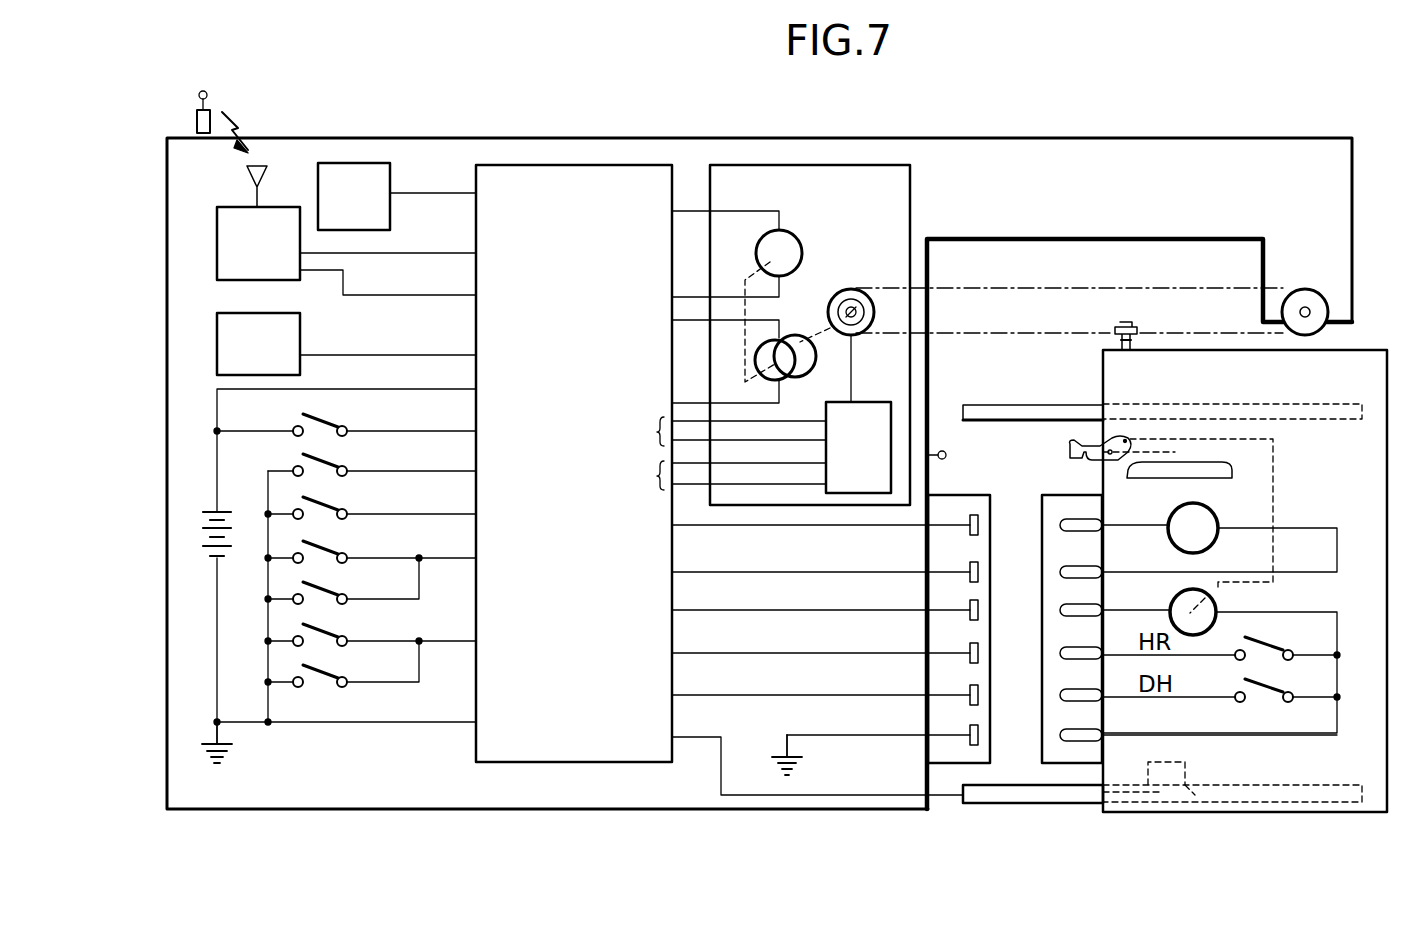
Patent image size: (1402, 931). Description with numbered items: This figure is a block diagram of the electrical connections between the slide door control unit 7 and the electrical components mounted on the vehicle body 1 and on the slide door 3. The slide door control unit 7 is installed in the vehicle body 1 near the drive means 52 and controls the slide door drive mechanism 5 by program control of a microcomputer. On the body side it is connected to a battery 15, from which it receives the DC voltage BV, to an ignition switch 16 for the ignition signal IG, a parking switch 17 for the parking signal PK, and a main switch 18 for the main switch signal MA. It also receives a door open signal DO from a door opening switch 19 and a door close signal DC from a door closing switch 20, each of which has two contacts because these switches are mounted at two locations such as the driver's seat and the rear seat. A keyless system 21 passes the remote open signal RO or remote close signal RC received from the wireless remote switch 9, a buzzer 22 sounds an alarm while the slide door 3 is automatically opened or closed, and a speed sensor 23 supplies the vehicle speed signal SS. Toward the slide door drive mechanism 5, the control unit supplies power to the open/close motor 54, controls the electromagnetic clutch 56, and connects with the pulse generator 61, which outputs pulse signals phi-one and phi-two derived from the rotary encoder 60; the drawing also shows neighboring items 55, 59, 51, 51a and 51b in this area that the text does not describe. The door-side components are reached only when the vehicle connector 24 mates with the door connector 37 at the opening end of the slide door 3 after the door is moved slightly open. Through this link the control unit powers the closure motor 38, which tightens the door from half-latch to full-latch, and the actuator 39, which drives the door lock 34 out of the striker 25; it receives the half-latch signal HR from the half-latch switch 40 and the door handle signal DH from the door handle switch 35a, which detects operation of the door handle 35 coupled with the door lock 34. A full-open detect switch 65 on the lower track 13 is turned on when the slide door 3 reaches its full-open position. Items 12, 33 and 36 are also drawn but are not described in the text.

The vehicle body 1 is at (1032, 119).
The slide door 3 is at (1176, 812).
The slide door drive mechanism 5 is at (1108, 192).
The slide door control unit 7 is at (620, 165).
The wireless remote switch 9 is at (197, 120).
The power feed harness 12 is at (1010, 405).
The lower track 13 is at (1035, 803).
The battery 15 is at (222, 562).
The ignition switch 16 is at (318, 418).
The parking switch 17 is at (318, 458).
The main switch 18 is at (318, 501).
The door opening switch 19 is at (318, 545).
The door closing switch 20 is at (318, 628).
The keyless system 21 is at (222, 207).
The buzzer 22 is at (360, 163).
The speed sensor 23 is at (300, 330).
The vehicle connector 24 is at (952, 495).
The striker 25 is at (942, 450).
The terminal 33 is at (1113, 338).
The door lock 34 is at (1072, 441).
The door handle 35 is at (1200, 478).
The door handle switch 35a is at (1262, 682).
The fastening screw 36 is at (1136, 334).
The door connector 37 is at (1062, 495).
The closure motor 38 is at (1168, 516).
The actuator 39 is at (1170, 606).
The half-latch switch 40 is at (1262, 640).
The drive cable 51 is at (1022, 291).
The cable branch 51a is at (1022, 337).
The cable branch 51b is at (1194, 333).
The drive means 52 is at (850, 165).
The open/close motor 54 is at (795, 240).
The cable drum 55 is at (856, 290).
The electromagnetic clutch 56 is at (805, 376).
The guide pulley 59 is at (1305, 289).
The rotary encoder 60 is at (830, 312).
The pulse generator 61 is at (877, 402).
The full-open detect switch 65 is at (1200, 815).